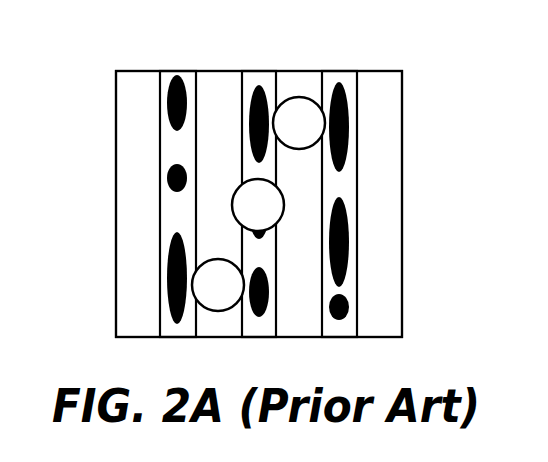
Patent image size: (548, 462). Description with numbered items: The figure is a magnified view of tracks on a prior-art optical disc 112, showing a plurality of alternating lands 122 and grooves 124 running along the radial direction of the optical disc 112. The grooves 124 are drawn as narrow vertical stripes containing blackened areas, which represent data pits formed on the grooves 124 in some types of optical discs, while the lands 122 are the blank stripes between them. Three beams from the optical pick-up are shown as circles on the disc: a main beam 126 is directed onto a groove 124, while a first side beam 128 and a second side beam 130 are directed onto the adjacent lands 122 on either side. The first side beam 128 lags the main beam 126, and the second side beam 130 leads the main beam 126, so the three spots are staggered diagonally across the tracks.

The optical disc 112 is at (114, 48).
The lands 122 is at (137, 342).
The grooves 124 is at (183, 67).
The main beam 126 is at (287, 219).
The first side beam 128 is at (216, 257).
The second side beam 130 is at (296, 153).